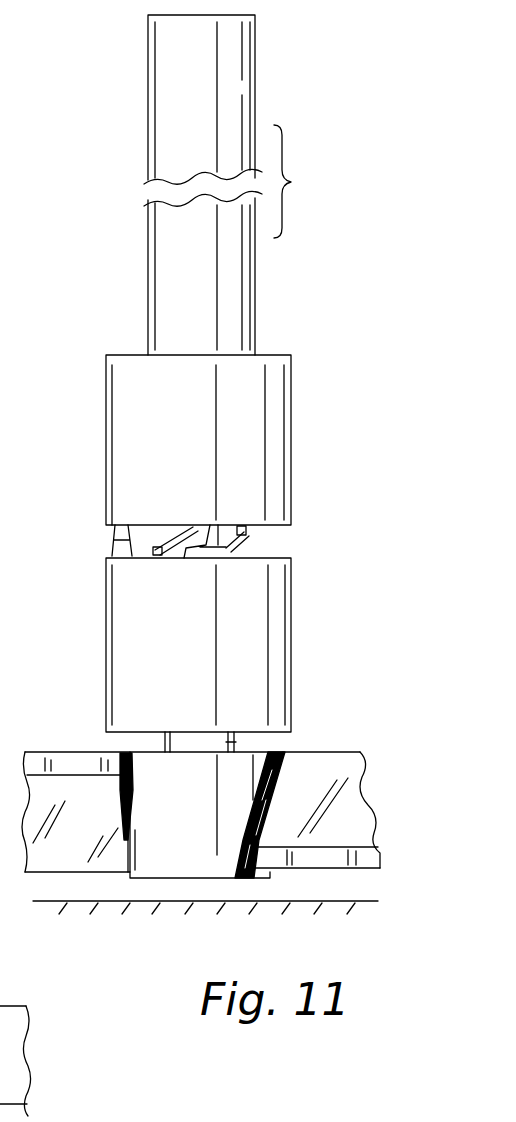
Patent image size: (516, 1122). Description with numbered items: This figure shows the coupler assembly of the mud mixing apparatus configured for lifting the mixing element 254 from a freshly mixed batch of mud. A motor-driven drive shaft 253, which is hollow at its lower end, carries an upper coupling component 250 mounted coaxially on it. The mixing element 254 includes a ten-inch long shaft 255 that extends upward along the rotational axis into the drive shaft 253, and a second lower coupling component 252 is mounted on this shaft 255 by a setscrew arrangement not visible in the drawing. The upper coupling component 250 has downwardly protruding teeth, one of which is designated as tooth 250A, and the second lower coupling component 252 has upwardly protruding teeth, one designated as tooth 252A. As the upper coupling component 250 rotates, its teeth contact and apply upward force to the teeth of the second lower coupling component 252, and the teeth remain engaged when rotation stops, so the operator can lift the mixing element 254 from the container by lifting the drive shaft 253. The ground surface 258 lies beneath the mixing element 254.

The drive shaft 253 is at (147, 118).
The upper coupling component 250 is at (292, 392).
The upper coupling component tooth 250A is at (246, 545).
The second lower coupling component 252 is at (293, 622).
The lower coupling component tooth 252A is at (172, 549).
The mixing element 254 is at (50, 752).
The shaft 255 is at (238, 743).
The ground surface 258 is at (81, 905).